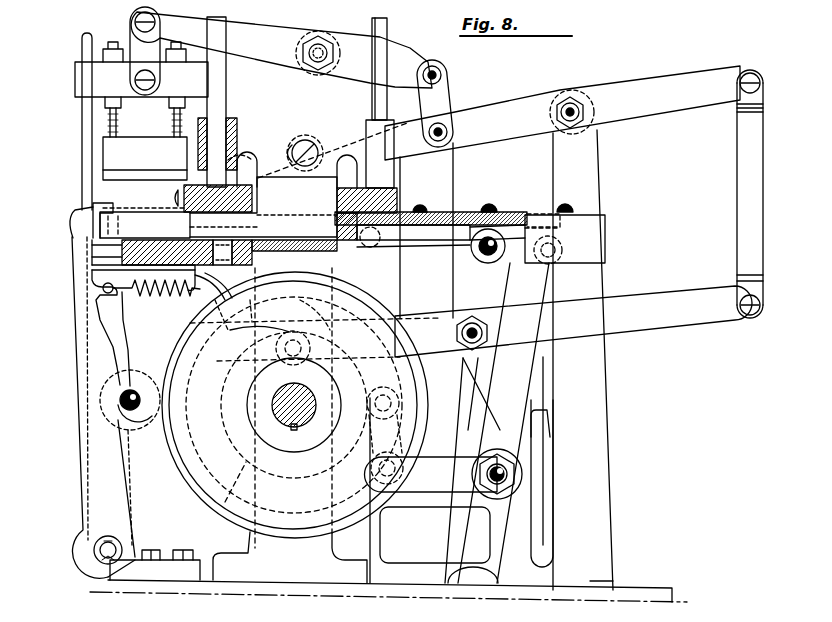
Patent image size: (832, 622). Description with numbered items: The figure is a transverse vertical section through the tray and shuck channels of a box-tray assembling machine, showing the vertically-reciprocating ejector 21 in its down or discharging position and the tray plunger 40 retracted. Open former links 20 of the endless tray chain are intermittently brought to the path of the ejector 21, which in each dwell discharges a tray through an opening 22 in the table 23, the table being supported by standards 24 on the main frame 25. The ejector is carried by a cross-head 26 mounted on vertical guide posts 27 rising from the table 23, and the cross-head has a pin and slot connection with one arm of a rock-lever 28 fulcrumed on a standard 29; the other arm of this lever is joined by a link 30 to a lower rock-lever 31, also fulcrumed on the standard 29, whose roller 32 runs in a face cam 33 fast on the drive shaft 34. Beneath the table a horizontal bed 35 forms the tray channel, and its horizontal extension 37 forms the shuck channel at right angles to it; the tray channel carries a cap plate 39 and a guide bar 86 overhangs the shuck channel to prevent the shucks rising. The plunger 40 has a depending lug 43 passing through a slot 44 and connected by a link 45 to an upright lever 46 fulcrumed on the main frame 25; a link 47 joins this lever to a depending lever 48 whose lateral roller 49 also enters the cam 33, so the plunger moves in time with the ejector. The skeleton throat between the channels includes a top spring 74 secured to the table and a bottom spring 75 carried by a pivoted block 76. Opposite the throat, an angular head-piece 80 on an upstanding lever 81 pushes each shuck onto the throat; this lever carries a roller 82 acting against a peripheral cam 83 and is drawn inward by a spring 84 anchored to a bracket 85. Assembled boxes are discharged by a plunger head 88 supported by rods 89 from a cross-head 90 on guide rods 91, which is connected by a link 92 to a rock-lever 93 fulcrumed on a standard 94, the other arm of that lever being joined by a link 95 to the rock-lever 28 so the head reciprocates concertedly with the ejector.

The open former links 20 is at (247, 168).
The vertically-reciprocating ejector 21 is at (218, 127).
The opening 22 is at (255, 196).
The table 23 is at (400, 197).
The standards 24 is at (361, 470).
The main frame 25 is at (662, 588).
The cross-head 26 is at (305, 140).
The vertical guide posts 27 is at (388, 38).
The rock-lever 28 is at (503, 102).
The standard 29 is at (598, 183).
The link 30 is at (736, 184).
The lower rock-lever 31 is at (633, 334).
The roller 32 is at (290, 333).
The face cam 33 is at (222, 504).
The drive shaft 34 is at (272, 415).
The horizontal bed 35 is at (608, 258).
The horizontal extension 37 is at (122, 250).
The cap plate 39 is at (605, 216).
The plunger 40 is at (458, 217).
The lug 43 is at (507, 213).
The slot 44 is at (490, 206).
The link 45 is at (510, 262).
The upright lever 46 is at (540, 520).
The link 47 is at (433, 492).
The depending lever 48 is at (400, 292).
The lateral roller 49 is at (400, 406).
The top spring 74 is at (252, 162).
The bottom spring 75 is at (223, 301).
The block 76 is at (311, 305).
The angular head-piece 80 is at (70, 222).
The upstanding lever 81 is at (82, 511).
The roller 82 is at (94, 404).
The peripheral cam 83 is at (182, 482).
The spring 84 is at (155, 296).
The bracket 85 is at (246, 330).
The guide bar 86 is at (184, 204).
The plunger head 88 is at (145, 158).
The rods 89 is at (108, 120).
The cross-head 90 is at (74, 72).
The guide rods 91 is at (80, 42).
The link 92 is at (130, 32).
The rock-lever 93 is at (298, 24).
The standard 94 is at (334, 42).
The link 95 is at (448, 84).